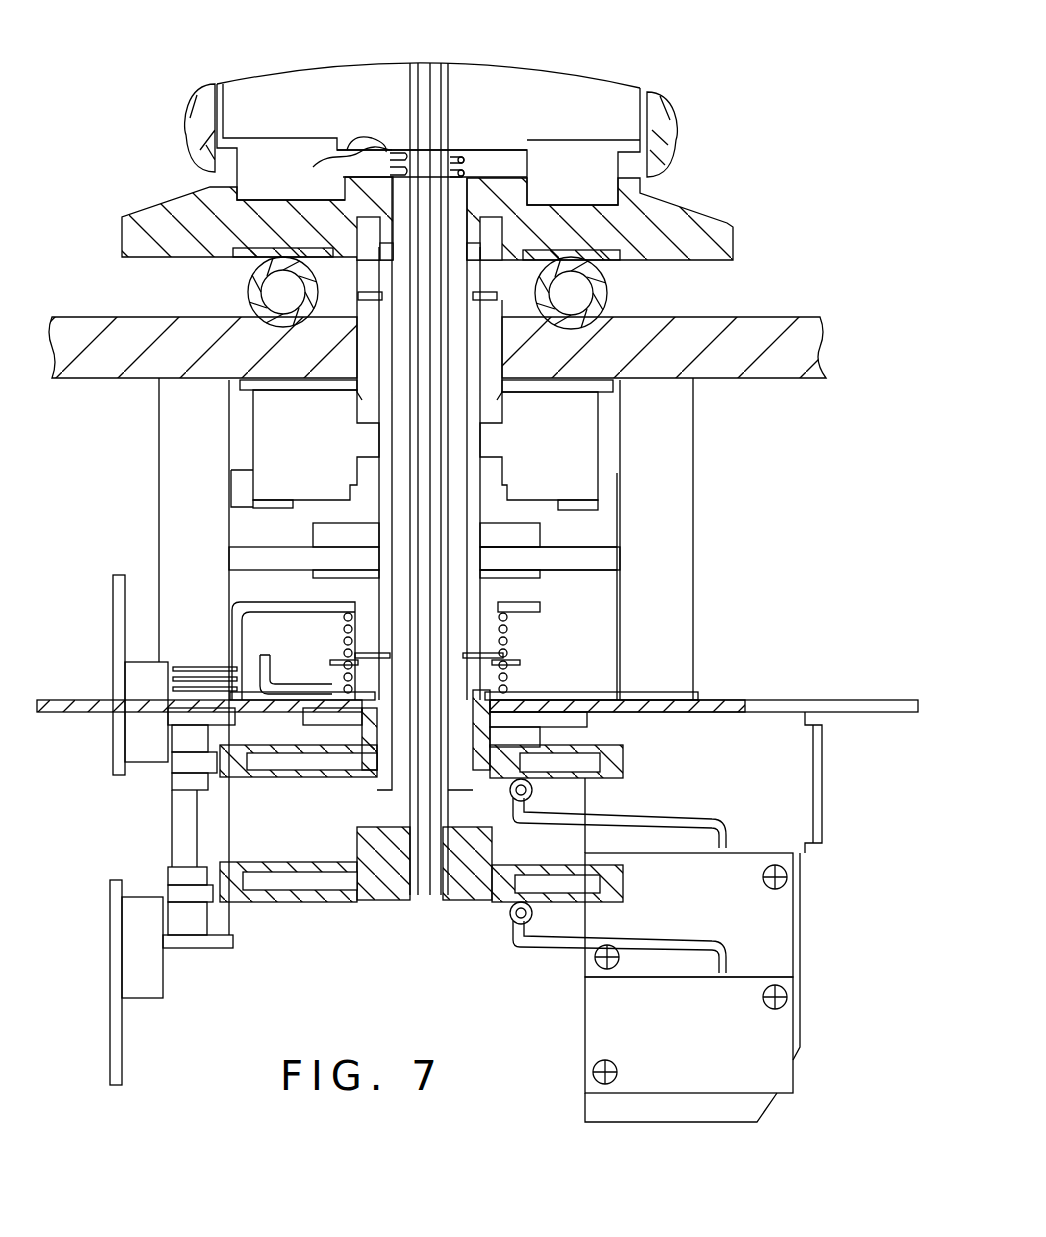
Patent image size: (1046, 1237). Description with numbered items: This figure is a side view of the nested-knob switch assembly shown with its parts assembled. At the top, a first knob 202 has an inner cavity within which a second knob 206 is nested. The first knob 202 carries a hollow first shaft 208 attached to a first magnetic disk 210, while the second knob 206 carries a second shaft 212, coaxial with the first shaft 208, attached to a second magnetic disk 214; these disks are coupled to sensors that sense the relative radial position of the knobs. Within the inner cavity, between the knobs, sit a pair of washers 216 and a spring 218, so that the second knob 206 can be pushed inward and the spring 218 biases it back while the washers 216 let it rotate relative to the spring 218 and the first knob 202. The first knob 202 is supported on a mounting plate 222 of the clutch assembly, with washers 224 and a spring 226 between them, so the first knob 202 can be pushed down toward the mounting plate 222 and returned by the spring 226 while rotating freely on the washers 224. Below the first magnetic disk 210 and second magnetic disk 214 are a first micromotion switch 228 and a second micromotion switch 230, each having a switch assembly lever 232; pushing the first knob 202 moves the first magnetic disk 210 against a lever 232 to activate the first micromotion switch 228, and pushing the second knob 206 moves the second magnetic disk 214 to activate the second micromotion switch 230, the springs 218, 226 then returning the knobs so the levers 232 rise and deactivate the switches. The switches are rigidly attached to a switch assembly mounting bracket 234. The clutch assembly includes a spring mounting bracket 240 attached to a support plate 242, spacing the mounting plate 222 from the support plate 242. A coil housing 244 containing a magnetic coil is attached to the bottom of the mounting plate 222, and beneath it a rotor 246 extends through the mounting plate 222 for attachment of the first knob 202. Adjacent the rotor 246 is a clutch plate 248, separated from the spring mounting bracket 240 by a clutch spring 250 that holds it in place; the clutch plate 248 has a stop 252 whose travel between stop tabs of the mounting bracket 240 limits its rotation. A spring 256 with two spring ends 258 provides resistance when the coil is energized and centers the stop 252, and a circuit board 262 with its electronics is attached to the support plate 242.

The first knob 202 is at (683, 212).
The second knob 206 is at (598, 90).
The first shaft 208 is at (398, 436).
The first magnetic disk 210 is at (285, 760).
The second shaft 212 is at (425, 447).
The second magnetic disk 214 is at (315, 880).
The washers 216 is at (345, 150).
The spring 218 is at (465, 160).
The mounting plate 222 is at (765, 366).
The washers 224 is at (238, 258).
The spring 226 is at (608, 295).
The first micromotion switch 228 is at (770, 914).
The second micromotion switch 230 is at (770, 1042).
The switch assembly lever 232 is at (515, 950).
The switch assembly mounting bracket 234 is at (823, 765).
The spring mounting bracket 240 is at (682, 542).
The support plate 242 is at (833, 707).
The coil housing 244 is at (588, 453).
The rotor 246 is at (607, 527).
The clutch plate 248 is at (608, 568).
The clutch spring 250 is at (508, 628).
The stop 252 is at (237, 645).
The spring 256 is at (506, 670).
The spring ends 258 is at (302, 680).
The circuit board 262 is at (110, 605).